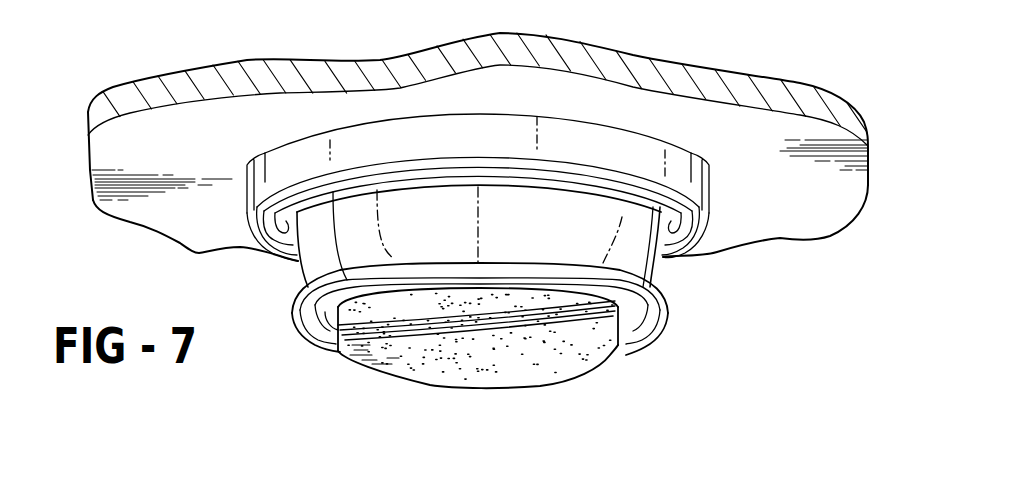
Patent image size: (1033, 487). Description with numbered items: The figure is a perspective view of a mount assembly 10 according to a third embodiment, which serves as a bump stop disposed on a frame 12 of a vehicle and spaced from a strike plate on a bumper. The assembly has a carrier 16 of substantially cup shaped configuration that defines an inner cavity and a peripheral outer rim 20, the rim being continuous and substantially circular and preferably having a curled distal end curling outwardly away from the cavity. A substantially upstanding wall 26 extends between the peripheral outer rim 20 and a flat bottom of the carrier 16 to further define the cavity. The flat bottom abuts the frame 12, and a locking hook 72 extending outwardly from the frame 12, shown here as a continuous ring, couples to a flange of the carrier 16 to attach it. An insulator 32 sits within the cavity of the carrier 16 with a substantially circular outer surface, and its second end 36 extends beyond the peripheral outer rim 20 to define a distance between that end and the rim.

The mount assembly 10 is at (205, 254).
The frame 12 is at (627, 105).
The carrier 16 is at (627, 240).
The peripheral outer rim 20 is at (637, 330).
The upstanding wall 26 is at (320, 255).
The insulator 32 is at (590, 373).
The second end 36 is at (460, 350).
The locking hook 72 is at (283, 225).